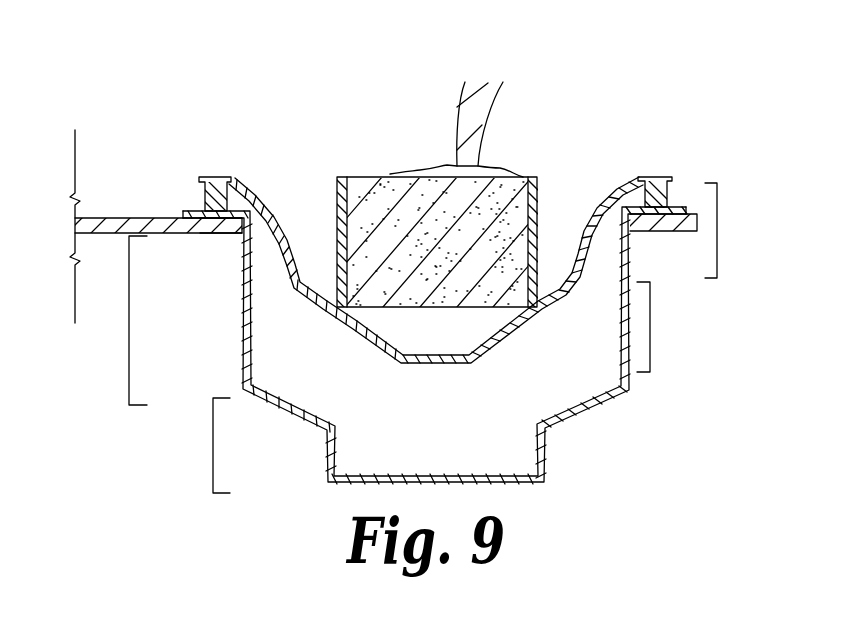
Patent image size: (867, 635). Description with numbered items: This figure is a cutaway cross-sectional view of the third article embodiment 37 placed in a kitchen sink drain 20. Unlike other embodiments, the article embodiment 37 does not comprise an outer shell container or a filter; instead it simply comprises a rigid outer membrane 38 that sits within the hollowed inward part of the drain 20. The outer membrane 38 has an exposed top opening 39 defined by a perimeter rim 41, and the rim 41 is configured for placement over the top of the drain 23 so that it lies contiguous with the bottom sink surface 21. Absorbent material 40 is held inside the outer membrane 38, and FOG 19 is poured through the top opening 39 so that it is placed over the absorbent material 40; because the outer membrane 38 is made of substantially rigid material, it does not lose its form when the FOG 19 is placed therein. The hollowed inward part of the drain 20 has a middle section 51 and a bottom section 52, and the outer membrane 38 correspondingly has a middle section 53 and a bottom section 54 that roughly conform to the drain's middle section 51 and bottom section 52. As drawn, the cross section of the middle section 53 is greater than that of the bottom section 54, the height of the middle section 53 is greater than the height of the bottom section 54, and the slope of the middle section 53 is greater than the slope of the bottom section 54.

The FOG 19 is at (468, 122).
The drain 20 is at (242, 362).
The bottom sink surface 21 is at (137, 218).
The top of the drain 23 is at (223, 224).
The third article embodiment 37 is at (560, 111).
The outer membrane 38 is at (293, 287).
The exposed top opening 39 is at (362, 177).
The absorbent material 40 is at (507, 223).
The perimeter rim 41 is at (660, 177).
The middle section of the drain 51 is at (121, 320).
The bottom section of the drain 52 is at (204, 445).
The middle section of the outer membrane 53 is at (729, 230).
The bottom section of the outer membrane 54 is at (659, 327).